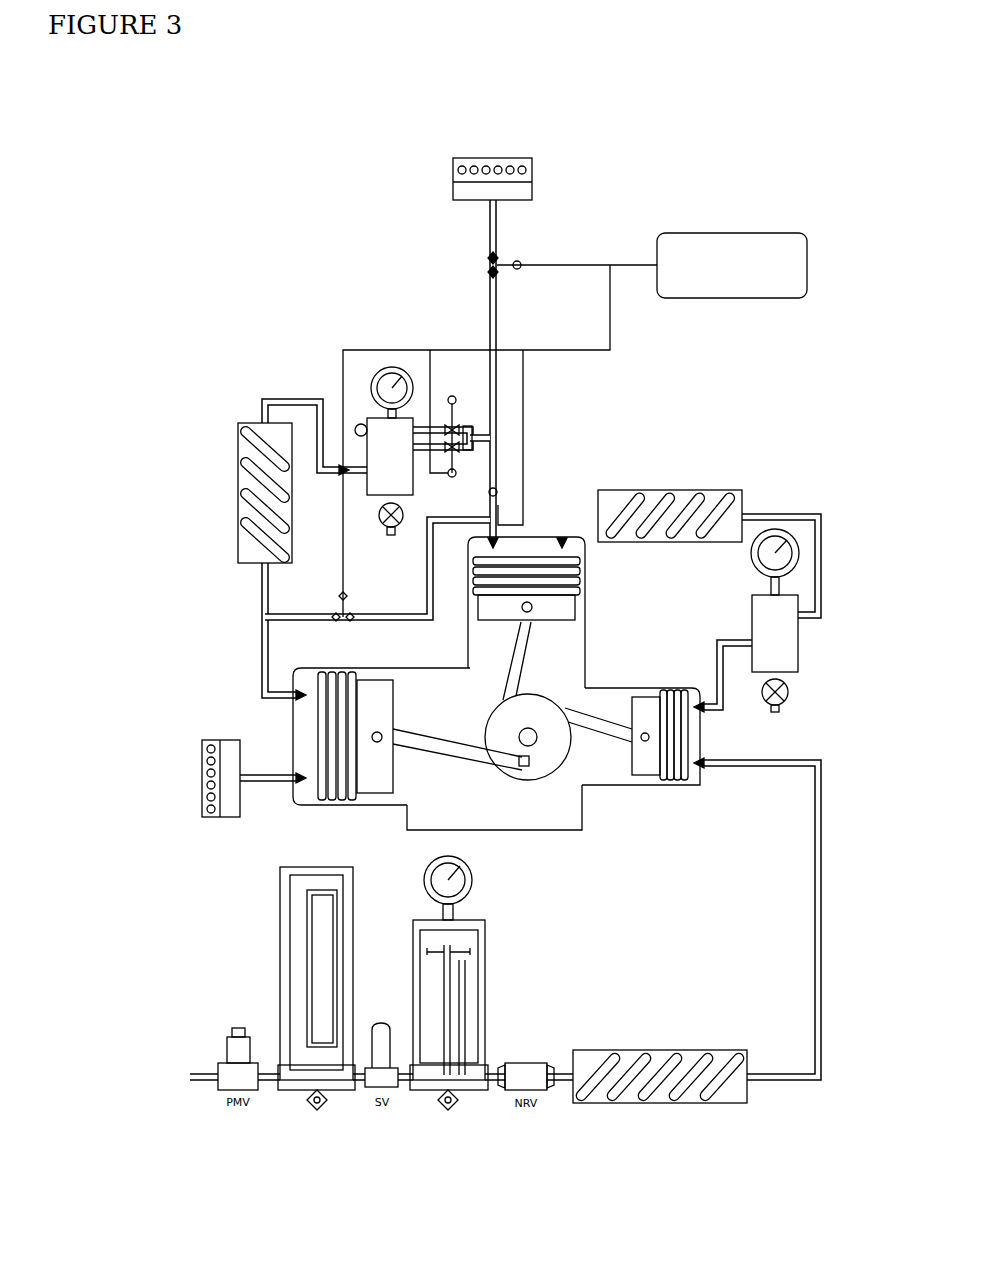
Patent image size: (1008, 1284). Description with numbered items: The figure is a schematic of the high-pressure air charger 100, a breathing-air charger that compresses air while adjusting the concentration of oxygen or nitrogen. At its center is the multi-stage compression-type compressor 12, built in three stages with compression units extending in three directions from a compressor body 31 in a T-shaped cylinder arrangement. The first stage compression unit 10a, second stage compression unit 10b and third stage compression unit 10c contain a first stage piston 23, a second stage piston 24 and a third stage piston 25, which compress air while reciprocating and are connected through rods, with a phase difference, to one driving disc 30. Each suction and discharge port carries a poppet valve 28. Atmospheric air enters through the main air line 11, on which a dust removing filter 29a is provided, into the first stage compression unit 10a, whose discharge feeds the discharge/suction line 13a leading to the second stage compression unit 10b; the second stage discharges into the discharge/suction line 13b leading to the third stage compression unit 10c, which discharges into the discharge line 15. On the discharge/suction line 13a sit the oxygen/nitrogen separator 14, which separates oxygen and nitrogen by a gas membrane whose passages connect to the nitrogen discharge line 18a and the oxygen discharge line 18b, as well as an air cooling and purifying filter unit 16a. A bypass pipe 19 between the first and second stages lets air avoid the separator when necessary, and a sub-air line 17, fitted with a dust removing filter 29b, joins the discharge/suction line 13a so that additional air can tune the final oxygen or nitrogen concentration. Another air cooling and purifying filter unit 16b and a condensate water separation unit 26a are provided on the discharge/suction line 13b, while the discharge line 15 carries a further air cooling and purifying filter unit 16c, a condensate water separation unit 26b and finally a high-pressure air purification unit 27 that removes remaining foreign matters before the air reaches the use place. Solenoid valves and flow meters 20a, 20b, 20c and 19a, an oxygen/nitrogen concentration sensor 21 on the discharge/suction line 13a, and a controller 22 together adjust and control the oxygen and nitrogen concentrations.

The high-pressure air charger 100 is at (262, 196).
The first stage compression unit 10a is at (327, 666).
The second stage compression unit 10b is at (590, 565).
The third stage compression unit 10c is at (690, 787).
The main air line 11 is at (263, 784).
The multi-stage compression-type compressor 12 is at (590, 832).
The discharge/suction line 13a is at (262, 408).
The discharge/suction line 13b is at (825, 541).
The oxygen/nitrogen separator 14 is at (367, 415).
The discharge line 15 is at (822, 945).
The air cooling and purifying filter unit 16a is at (238, 458).
The air cooling and purifying filter unit 16b is at (692, 490).
The air cooling and purifying filter unit 16c is at (727, 1105).
The sub-air line 17 is at (498, 333).
The nitrogen discharge line 18a is at (428, 425).
The oxygen discharge line 18b is at (414, 472).
The bypass pipe 19 is at (293, 612).
The solenoid valve and flow meter 19a is at (348, 610).
The solenoid valve and flow meter 20a is at (453, 396).
The solenoid valve and flow meter 20b is at (456, 473).
The solenoid valve and flow meter 20c is at (520, 270).
The oxygen/nitrogen concentration sensor 21 is at (495, 490).
The controller 22 is at (767, 233).
The first stage piston 23 is at (368, 795).
The second stage piston 24 is at (575, 605).
The third stage piston 25 is at (643, 777).
The condensate water separation unit 26a is at (800, 637).
The condensate water separation unit 26b is at (487, 975).
The high-pressure air purification unit 27 is at (333, 935).
The poppet valve 28 is at (298, 690).
The dust removing filter 29a is at (231, 812).
The dust removing filter 29b is at (535, 186).
The driving disc 30 is at (545, 768).
The compressor body 31 is at (513, 832).